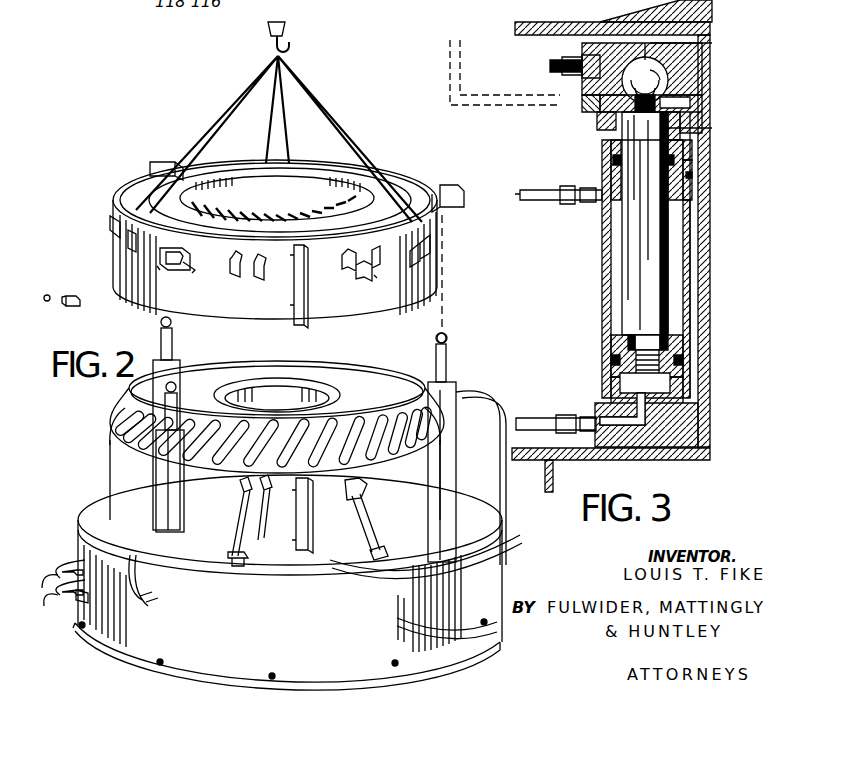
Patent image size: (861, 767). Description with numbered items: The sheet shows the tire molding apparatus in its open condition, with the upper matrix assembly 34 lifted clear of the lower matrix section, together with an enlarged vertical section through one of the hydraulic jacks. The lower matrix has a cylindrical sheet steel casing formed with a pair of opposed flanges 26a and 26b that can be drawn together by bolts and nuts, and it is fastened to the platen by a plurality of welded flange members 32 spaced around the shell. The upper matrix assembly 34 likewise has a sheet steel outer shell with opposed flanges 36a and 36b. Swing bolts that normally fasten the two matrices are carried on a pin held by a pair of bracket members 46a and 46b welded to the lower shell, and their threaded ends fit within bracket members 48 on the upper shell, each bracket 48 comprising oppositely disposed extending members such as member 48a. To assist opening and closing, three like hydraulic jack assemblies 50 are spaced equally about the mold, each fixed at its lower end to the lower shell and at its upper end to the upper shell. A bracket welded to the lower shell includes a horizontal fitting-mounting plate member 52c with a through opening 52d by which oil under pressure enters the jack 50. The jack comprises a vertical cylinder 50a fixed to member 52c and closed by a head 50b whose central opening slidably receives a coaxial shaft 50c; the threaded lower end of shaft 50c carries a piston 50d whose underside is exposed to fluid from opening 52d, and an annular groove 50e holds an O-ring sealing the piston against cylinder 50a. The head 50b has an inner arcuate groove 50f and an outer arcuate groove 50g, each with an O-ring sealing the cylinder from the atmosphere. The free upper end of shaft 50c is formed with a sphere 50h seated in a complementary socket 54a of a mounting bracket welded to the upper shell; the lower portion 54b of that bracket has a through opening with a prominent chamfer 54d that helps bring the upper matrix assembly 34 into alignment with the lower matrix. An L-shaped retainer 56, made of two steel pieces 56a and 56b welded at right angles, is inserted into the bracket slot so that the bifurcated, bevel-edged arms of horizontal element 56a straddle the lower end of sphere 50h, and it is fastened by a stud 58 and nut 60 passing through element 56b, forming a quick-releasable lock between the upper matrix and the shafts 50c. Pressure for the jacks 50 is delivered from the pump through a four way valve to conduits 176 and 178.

In FIG. 2, the upper matrix assembly 34 is at (106, 216).
In FIG. 2, the flange member 32 is at (101, 440).
In FIG. 2, the flange 36a is at (292, 290).
In FIG. 2, the flange 36b is at (310, 278).
In FIG. 2, the bracket member 48 is at (236, 258).
In FIG. 2, the extending member 48a is at (256, 286).
In FIG. 2, the L-shaped retainer 56 is at (190, 264).
In FIG. 3, the L-shaped retainer 56 is at (574, 114).
In FIG. 3, the horizontal element 56a is at (600, 118).
In FIG. 3, the element 56b is at (645, 43).
In FIG. 2, the stud 58 is at (182, 270).
In FIG. 3, the stud 58 is at (550, 66).
In FIG. 2, the nut 60 is at (64, 305).
In FIG. 3, the nut 60 is at (582, 80).
In FIG. 2, the bracket member 46a is at (242, 500).
In FIG. 2, the bracket member 46b is at (285, 505).
In FIG. 2, the flange 26a is at (246, 556).
In FIG. 2, the flange 26b is at (314, 510).
In FIG. 2, the conduit 176 is at (58, 596).
In FIG. 2, the conduit 178 is at (52, 570).
In FIG. 3, the hydraulic jack assembly 50 is at (591, 279).
In FIG. 3, the vertical cylinder 50a is at (606, 314).
In FIG. 3, the head 50b is at (606, 152).
In FIG. 3, the coaxial shaft 50c is at (622, 222).
In FIG. 3, the piston 50d is at (678, 340).
In FIG. 3, the annular groove 50e is at (683, 362).
In FIG. 3, the inner arcuate groove 50f is at (690, 165).
In FIG. 3, the outer arcuate groove 50g is at (690, 186).
In FIG. 3, the sphere 50h is at (668, 82).
In FIG. 3, the socket 54a is at (702, 62).
In FIG. 3, the lower portion of bracket 54b is at (702, 112).
In FIG. 3, the taper or chamfer 54d is at (686, 140).
In FIG. 3, the fitting-mounting plate member 52c is at (698, 422).
In FIG. 3, the through opening 52d is at (662, 447).